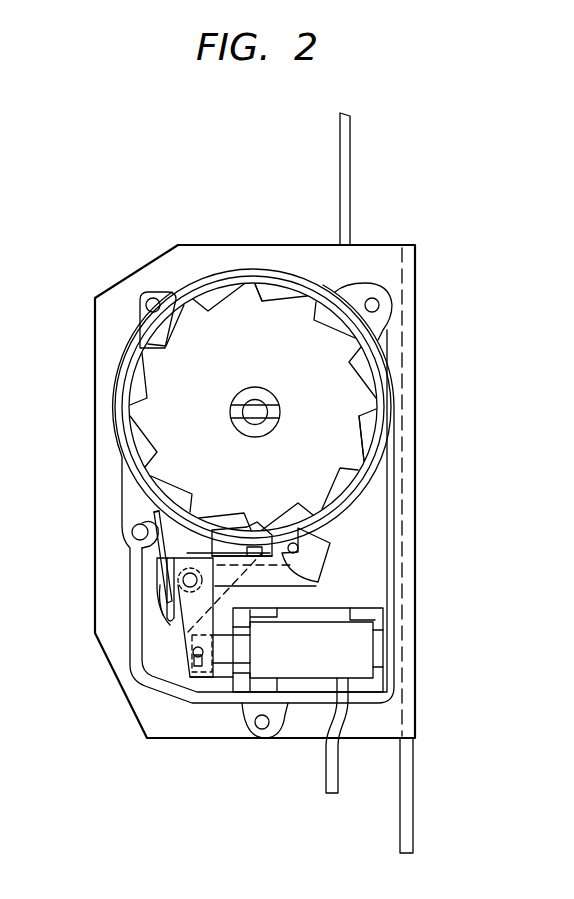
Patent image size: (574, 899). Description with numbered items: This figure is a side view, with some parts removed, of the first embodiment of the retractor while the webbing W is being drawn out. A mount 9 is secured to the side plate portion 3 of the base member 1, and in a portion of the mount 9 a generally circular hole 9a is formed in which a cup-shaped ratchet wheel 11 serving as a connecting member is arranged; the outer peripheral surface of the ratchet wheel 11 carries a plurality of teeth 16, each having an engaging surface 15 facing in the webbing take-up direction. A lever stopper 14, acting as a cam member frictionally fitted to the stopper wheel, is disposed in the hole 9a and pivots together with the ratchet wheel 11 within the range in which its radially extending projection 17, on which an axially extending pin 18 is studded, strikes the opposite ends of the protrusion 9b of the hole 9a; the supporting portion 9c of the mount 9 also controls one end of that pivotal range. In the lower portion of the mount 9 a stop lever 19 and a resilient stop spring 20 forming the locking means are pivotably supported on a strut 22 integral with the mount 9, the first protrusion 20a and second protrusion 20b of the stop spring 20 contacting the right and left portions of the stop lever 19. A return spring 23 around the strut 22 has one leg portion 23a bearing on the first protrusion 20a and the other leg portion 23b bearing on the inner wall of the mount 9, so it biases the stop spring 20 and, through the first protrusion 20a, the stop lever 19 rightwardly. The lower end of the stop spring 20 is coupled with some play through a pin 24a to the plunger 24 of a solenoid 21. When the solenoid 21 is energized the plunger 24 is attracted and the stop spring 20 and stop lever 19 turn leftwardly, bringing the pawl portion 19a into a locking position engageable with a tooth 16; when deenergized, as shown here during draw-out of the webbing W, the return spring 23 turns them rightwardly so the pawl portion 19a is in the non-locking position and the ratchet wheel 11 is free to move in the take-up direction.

The base member 1 is at (418, 808).
The side plate portion 3 is at (152, 278).
The mount 9 is at (212, 690).
The hole 9a is at (365, 487).
The protrusion 9b is at (242, 545).
The supporting portion 9c is at (128, 531).
The ratchet wheel 11 is at (340, 405).
The lever stopper 14 is at (375, 432).
The engaging surface 15 is at (270, 292).
The teeth 16 is at (305, 310).
The projection 17 is at (302, 574).
The pin 18 is at (298, 550).
The stop lever 19 is at (192, 650).
The pawl portion 19a is at (310, 540).
The stop spring 20 is at (160, 700).
The first protrusion 20a is at (207, 540).
The second protrusion 20b is at (164, 604).
The solenoid 21 is at (375, 655).
The strut 22 is at (183, 581).
The return spring 23 is at (185, 625).
The leg portion 23a is at (272, 545).
The leg portion 23b is at (155, 566).
The plunger 24 is at (232, 680).
The pin 24a is at (178, 712).
The webbing W is at (351, 174).